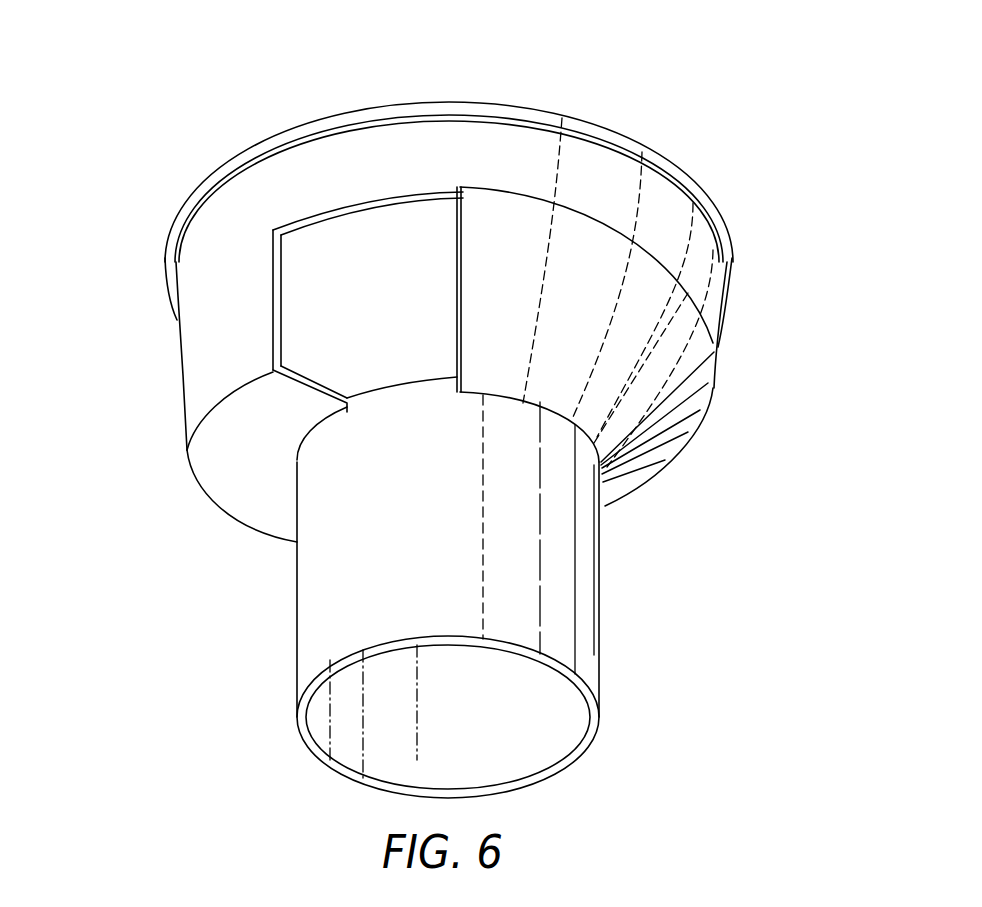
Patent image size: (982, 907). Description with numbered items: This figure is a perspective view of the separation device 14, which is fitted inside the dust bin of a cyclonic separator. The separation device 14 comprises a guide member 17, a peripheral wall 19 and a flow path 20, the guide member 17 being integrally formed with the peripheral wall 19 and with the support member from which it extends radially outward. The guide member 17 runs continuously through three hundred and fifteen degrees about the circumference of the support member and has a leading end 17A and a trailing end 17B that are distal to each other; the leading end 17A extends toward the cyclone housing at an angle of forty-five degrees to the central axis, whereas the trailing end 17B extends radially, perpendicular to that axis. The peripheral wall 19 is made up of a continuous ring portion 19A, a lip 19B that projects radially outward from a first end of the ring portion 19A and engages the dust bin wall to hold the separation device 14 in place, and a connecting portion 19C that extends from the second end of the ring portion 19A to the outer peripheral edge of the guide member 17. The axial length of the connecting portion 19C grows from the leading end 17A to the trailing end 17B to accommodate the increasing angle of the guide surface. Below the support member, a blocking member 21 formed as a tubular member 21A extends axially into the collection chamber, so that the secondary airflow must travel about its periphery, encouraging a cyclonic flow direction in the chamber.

The separation device 14 is at (143, 123).
The guide member 17 is at (653, 393).
The leading end 17A is at (460, 310).
The trailing end 17B is at (307, 388).
The peripheral wall 19 is at (178, 321).
The continuous ring portion 19A is at (362, 172).
The lip 19B is at (578, 124).
The connecting portion 19C is at (660, 198).
The flow path 20 is at (402, 263).
The blocking member 21 is at (590, 537).
The tubular member 21A is at (600, 700).